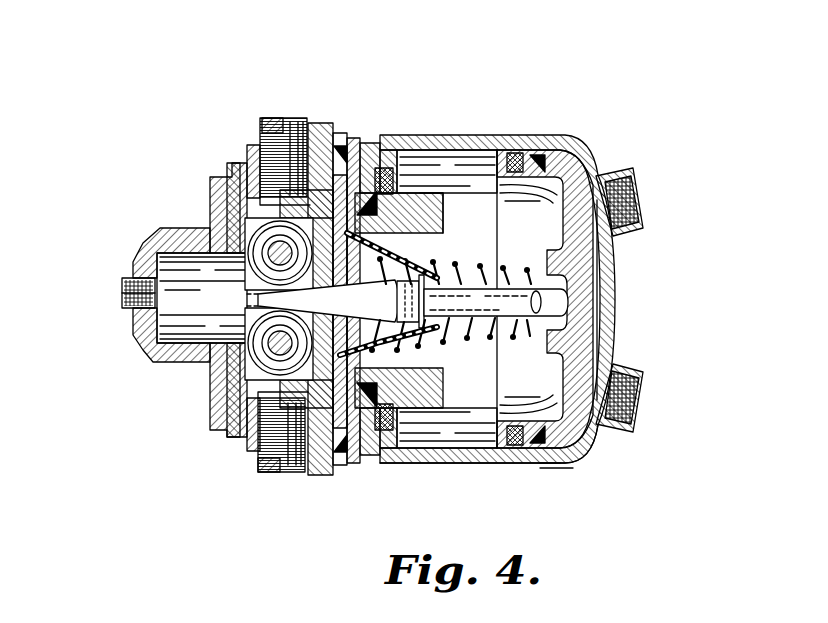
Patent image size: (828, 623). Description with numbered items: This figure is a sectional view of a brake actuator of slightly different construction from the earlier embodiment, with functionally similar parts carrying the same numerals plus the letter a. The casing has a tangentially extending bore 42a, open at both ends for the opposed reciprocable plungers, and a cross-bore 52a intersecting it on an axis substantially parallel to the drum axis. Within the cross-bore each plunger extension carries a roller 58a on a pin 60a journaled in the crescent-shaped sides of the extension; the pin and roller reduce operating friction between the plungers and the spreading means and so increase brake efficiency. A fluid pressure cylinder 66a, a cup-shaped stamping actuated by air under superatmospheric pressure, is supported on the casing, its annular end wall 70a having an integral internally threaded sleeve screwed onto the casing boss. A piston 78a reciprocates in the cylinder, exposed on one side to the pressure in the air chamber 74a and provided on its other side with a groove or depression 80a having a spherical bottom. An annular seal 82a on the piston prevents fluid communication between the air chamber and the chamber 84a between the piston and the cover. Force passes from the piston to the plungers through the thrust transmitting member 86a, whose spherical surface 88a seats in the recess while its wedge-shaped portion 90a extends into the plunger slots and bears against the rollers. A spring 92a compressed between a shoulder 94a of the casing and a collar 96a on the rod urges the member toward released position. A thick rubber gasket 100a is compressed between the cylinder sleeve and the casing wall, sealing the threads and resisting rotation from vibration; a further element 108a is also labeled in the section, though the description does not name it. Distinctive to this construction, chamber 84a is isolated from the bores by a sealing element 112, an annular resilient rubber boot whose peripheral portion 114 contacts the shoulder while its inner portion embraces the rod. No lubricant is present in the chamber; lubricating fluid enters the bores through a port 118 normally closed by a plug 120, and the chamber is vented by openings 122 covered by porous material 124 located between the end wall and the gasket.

The tangentially extending bore 42a is at (247, 222).
The cross-bore 52a is at (200, 333).
The roller 58a is at (243, 225).
The pin 60a is at (262, 255).
The fluid pressure cylinder 66a is at (577, 463).
The end wall of the fluid pressure cylinder 70a is at (372, 458).
The air chamber 74a is at (597, 273).
The piston 78a is at (587, 363).
The groove or depression 80a is at (618, 293).
The annular seal 82a is at (548, 470).
The chamber 84a is at (455, 447).
The thrust transmitting member 86a is at (500, 312).
The spherical surface 88a is at (614, 312).
The wedge-shaped portion 90a is at (245, 165).
The spring 92a is at (478, 262).
The shoulder of the casing 94a is at (257, 447).
The collar 96a is at (618, 248).
The rubber gasket 100a is at (360, 460).
The seal 108a is at (347, 137).
The sealing element 112 is at (428, 225).
The peripheral portion 114 is at (362, 193).
The port 118 is at (143, 275).
The plug 120 is at (124, 307).
The openings 122 is at (388, 263).
The porous material 124 is at (413, 470).